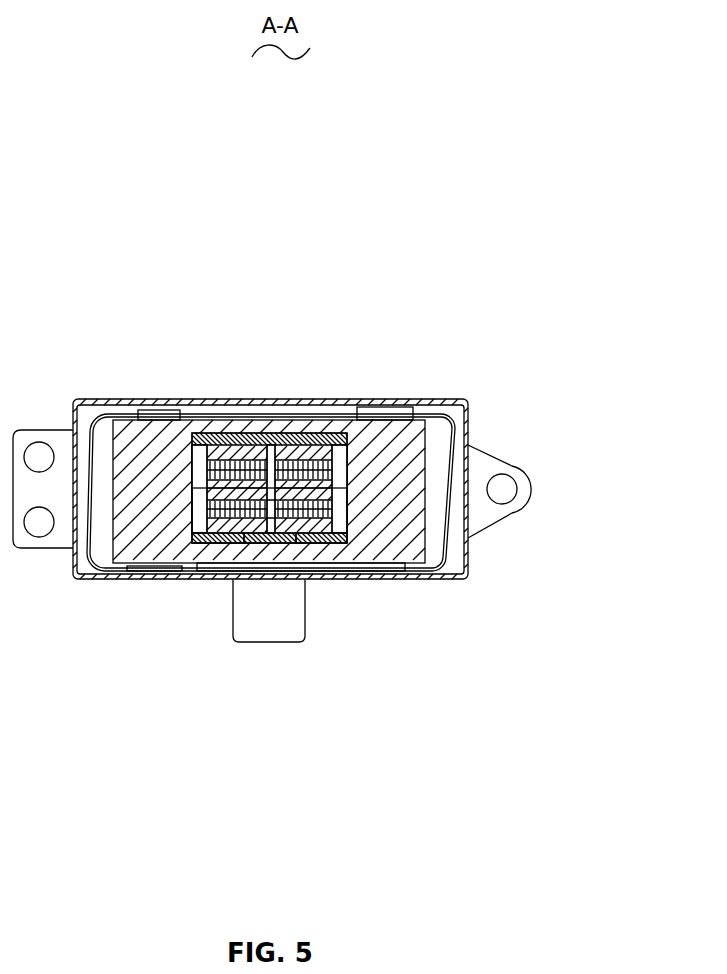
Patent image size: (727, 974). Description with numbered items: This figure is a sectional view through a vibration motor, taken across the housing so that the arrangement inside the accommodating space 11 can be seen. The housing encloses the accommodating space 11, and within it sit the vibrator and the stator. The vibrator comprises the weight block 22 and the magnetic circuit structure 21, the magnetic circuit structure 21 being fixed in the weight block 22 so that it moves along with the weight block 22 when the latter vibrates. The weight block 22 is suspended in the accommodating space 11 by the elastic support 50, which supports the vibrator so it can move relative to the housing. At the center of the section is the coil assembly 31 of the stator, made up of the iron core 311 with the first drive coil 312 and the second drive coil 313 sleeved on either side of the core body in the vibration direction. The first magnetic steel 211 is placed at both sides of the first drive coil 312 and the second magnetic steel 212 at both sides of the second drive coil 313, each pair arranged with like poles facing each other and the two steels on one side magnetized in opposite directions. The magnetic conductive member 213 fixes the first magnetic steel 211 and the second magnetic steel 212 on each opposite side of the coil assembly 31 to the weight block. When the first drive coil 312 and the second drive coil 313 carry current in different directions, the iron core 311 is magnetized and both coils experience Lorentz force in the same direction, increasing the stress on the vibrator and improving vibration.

The accommodating space 11 is at (453, 562).
The weight block 22 is at (403, 450).
The elastic support 50 is at (447, 498).
The coil assembly 31 is at (307, 390).
The iron core 311 is at (377, 422).
The first drive coil 312 is at (232, 437).
The second drive coil 313 is at (287, 437).
The magnetic circuit structure 21 is at (261, 612).
The first magnetic steel 211 is at (212, 547).
The second magnetic steel 212 is at (292, 545).
The magnetic conductive member 213 is at (330, 545).